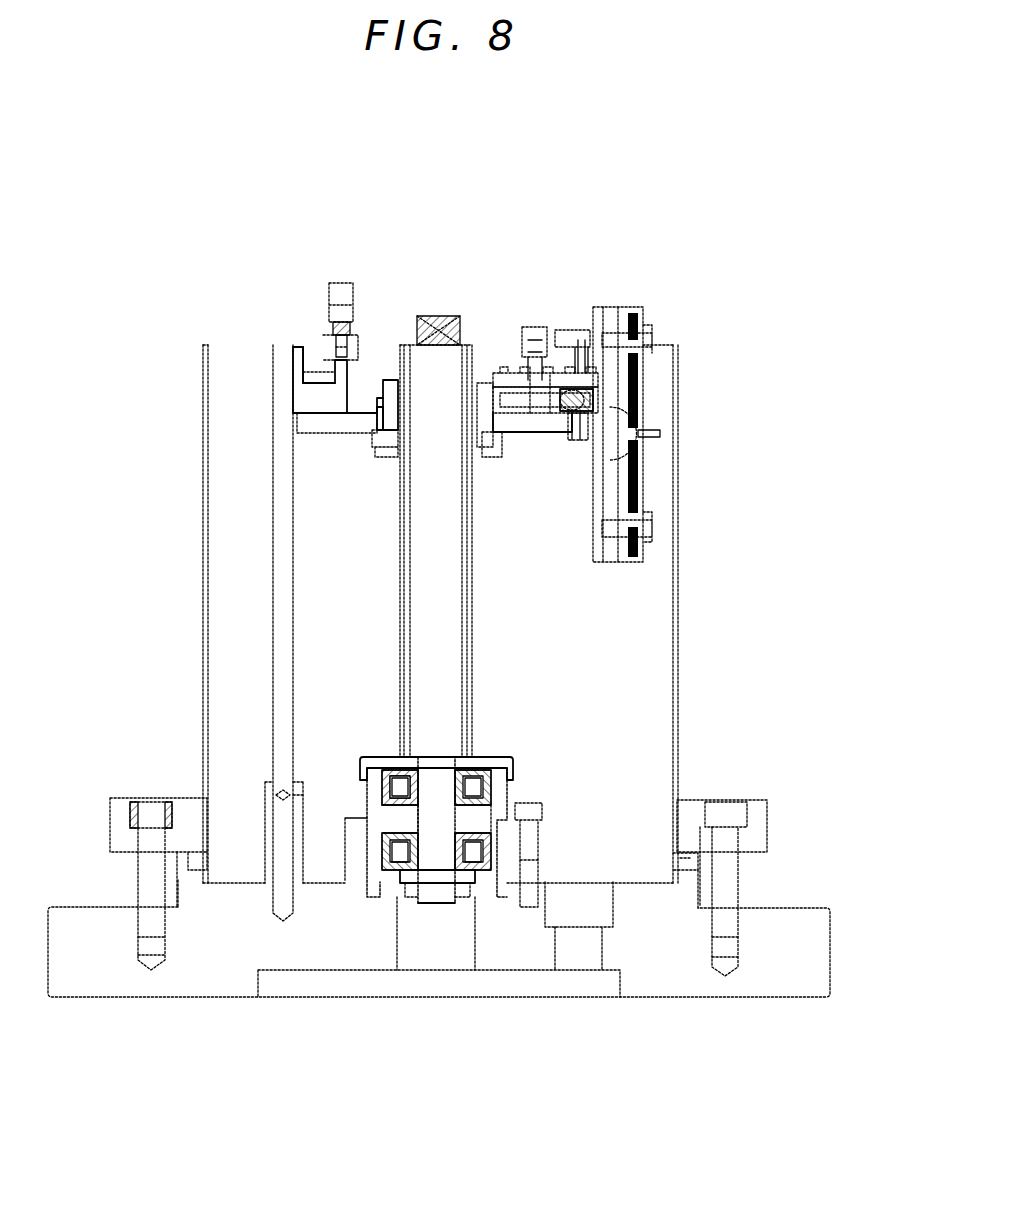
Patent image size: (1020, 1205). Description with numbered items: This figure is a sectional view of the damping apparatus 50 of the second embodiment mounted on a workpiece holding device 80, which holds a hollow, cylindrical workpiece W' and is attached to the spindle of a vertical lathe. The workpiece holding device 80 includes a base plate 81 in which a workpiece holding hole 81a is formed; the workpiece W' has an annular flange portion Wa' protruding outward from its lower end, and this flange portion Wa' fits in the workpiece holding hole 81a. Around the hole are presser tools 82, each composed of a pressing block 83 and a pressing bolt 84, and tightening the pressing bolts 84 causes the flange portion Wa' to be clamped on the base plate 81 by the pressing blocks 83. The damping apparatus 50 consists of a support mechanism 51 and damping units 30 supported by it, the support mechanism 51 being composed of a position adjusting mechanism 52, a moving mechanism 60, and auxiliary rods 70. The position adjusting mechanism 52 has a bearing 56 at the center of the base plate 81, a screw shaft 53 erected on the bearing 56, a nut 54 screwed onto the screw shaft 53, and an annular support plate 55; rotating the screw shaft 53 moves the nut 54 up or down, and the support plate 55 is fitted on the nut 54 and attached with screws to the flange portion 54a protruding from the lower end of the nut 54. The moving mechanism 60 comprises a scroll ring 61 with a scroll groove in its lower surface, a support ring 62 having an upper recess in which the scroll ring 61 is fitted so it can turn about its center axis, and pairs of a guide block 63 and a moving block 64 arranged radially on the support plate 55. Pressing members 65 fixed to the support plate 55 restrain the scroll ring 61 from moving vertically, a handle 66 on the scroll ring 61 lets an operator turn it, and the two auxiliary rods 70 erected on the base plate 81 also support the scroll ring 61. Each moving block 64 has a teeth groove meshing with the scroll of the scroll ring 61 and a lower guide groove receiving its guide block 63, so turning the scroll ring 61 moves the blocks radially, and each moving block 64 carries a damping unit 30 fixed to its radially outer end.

The damping unit 30 is at (620, 307).
The damping apparatus 50 is at (470, 443).
The support mechanism 51 is at (351, 356).
The position adjusting mechanism 52 is at (537, 347).
The screw shaft 53 is at (458, 598).
The nut 54 is at (378, 414).
The flange portion 54a is at (398, 457).
The annular support plate 55 is at (519, 430).
The bearing 56 is at (500, 793).
The moving mechanism 60 is at (271, 301).
The scroll ring 61 is at (313, 350).
The support ring 62 is at (297, 391).
The guide block 63 is at (521, 420).
The moving block 64 is at (503, 385).
The pressing member 65 is at (565, 330).
The handle 66 is at (343, 283).
The auxiliary rod 70 is at (273, 520).
The workpiece holding device 80 is at (460, 1025).
The base plate 81 is at (678, 998).
The workpiece holding hole 81a is at (193, 862).
The presser tool 82 is at (735, 842).
The pressing block 83 is at (755, 800).
The pressing bolt 84 is at (722, 812).
The workpiece W' is at (405, 614).
The flange portion Wa' is at (741, 877).